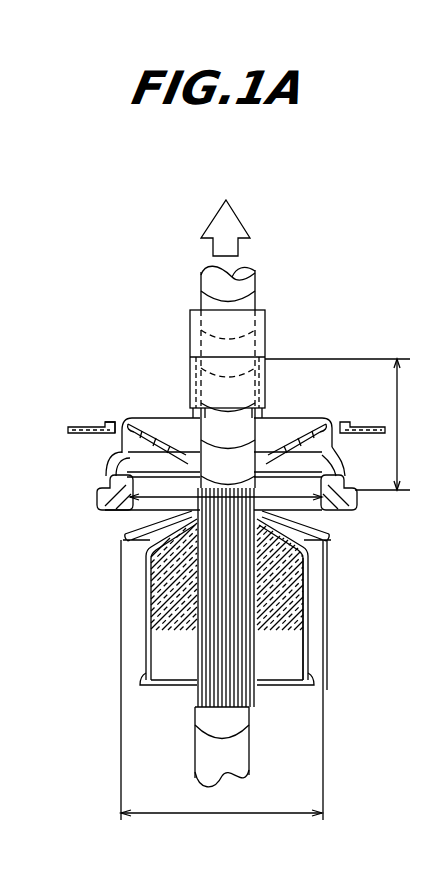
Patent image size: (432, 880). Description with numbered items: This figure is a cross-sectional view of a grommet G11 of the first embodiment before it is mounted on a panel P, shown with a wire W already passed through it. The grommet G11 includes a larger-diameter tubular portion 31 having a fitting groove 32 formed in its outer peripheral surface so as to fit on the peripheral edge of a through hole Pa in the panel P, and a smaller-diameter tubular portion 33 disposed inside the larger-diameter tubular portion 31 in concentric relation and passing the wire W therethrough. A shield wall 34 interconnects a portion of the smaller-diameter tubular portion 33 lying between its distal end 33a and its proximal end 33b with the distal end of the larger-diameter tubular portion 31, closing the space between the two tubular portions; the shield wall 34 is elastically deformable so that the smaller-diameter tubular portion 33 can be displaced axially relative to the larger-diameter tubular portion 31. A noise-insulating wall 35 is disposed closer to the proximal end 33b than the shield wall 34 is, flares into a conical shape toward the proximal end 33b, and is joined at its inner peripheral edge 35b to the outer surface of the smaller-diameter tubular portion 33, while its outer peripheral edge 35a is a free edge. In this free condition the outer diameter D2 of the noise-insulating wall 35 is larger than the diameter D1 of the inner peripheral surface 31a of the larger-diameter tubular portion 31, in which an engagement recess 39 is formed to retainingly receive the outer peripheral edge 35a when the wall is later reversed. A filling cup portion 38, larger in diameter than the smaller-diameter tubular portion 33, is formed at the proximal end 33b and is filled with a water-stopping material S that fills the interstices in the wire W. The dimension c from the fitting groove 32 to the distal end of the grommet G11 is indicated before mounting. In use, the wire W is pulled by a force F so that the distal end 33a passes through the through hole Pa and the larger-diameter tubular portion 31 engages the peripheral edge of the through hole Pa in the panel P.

The force F is at (225, 211).
The wire W is at (200, 690).
The distal end 33a is at (265, 348).
The smaller-diameter tubular portion 33 is at (268, 408).
The grommet G11 is at (313, 417).
The shield wall 34 is at (146, 418).
The engagement recess 39 is at (113, 452).
The fitting groove 32 is at (98, 481).
The larger-diameter tubular portion 31 is at (98, 501).
The inner peripheral surface 31a is at (137, 512).
The outer peripheral edge 35a is at (127, 540).
The noise-insulating wall 35 is at (124, 548).
The inner peripheral edge 35b is at (137, 552).
The filling cup portion 38 is at (146, 656).
The water-stopping material S is at (295, 608).
The proximal end 33b is at (308, 544).
The panel P is at (72, 426).
The through hole Pa is at (107, 422).
The dimension c is at (337, 424).
The diameter of the inner peripheral surface D1 is at (300, 509).
The outer diameter of the noise-insulating wall D2 is at (222, 694).